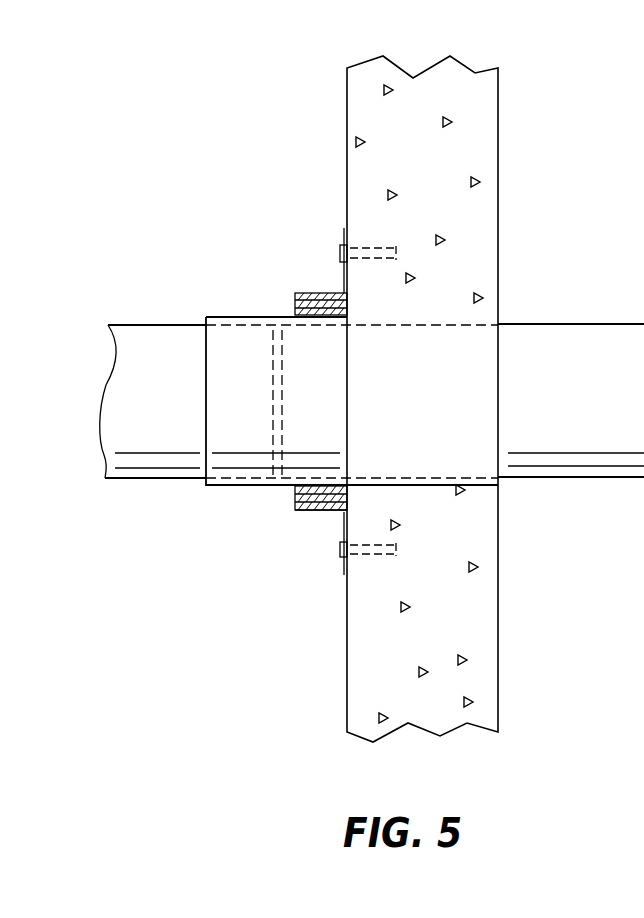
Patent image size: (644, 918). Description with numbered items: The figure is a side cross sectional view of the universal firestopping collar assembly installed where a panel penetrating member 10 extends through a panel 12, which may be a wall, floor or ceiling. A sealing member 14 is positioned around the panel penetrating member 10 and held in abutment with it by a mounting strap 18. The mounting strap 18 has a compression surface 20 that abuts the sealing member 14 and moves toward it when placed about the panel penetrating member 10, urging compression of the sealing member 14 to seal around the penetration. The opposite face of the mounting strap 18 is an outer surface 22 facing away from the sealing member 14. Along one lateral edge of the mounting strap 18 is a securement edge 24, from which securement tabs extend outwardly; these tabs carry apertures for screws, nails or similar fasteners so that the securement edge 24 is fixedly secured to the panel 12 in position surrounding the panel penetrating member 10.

The panel penetrating member 10 is at (130, 448).
The panel 12 is at (496, 588).
The sealing member 14 is at (292, 486).
The mounting strap 18 is at (297, 293).
The compression surface 20 is at (296, 497).
The outer surface 22 is at (305, 511).
The securement edge 24 is at (341, 293).